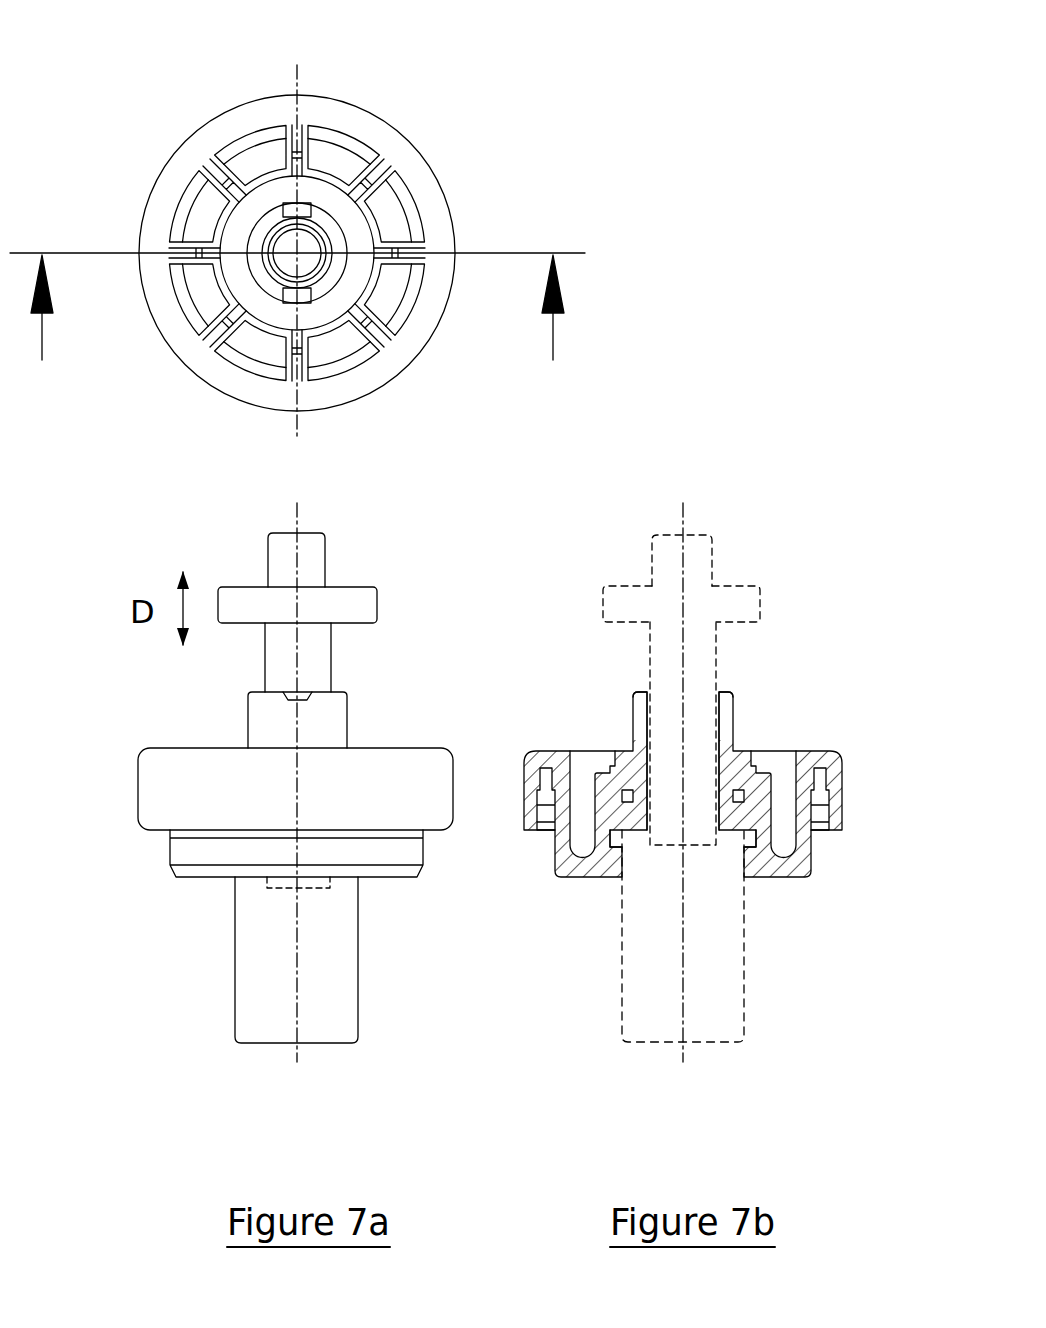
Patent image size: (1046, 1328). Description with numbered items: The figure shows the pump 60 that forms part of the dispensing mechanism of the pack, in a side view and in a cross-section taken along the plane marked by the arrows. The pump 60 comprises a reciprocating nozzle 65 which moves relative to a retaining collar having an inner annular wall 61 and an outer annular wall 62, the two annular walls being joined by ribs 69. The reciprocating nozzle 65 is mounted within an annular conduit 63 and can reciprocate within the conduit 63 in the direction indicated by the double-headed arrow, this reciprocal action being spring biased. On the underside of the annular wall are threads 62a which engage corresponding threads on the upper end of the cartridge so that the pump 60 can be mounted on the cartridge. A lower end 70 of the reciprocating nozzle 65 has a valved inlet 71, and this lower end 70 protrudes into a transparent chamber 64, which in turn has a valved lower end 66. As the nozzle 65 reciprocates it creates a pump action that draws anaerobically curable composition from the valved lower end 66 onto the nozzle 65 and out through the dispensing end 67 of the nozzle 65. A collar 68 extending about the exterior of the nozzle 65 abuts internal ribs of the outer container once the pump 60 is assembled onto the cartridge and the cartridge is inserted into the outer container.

In FIG. 7A, the pump 60 is at (480, 168).
In FIG. 7B, the pump 60 is at (616, 726).
In FIG. 7A, the inner annular wall 61 is at (407, 152).
In FIG. 7B, the inner annular wall 61 is at (830, 765).
In FIG. 7A, the outer annular wall 62 is at (347, 357).
In FIG. 7B, the outer annular wall 62 is at (802, 865).
In FIG. 7B, the threads 62a is at (833, 793).
In FIG. 7A, the annular conduit 63 is at (333, 708).
In FIG. 7B, the annular conduit 63 is at (723, 718).
In FIG. 7A, the chamber 64 is at (343, 990).
In FIG. 7B, the chamber 64 is at (718, 986).
In FIG. 7A, the reciprocating nozzle 65 is at (310, 217).
In FIG. 7B, the reciprocating nozzle 65 is at (695, 560).
In FIG. 7A, the valved lower end 66 is at (303, 1051).
In FIG. 7B, the valved lower end 66 is at (690, 1052).
In FIG. 7A, the dispensing end 67 is at (288, 253).
In FIG. 7B, the dispensing end 67 is at (693, 519).
In FIG. 7A, the collar 68 is at (357, 230).
In FIG. 7B, the collar 68 is at (758, 604).
In FIG. 7A, the ribs 69 is at (362, 167).
In FIG. 7B, the ribs 69 is at (760, 750).
In FIG. 7A, the lower end 70 is at (265, 884).
In FIG. 7B, the lower end 70 is at (660, 847).
In FIG. 7A, the valved inlet 71 is at (280, 903).
In FIG. 7B, the valved inlet 71 is at (695, 858).